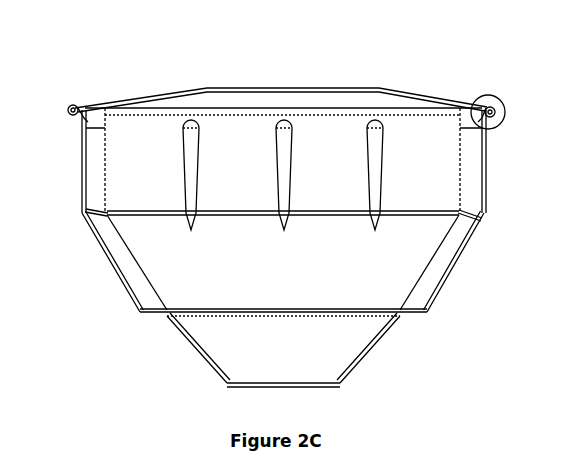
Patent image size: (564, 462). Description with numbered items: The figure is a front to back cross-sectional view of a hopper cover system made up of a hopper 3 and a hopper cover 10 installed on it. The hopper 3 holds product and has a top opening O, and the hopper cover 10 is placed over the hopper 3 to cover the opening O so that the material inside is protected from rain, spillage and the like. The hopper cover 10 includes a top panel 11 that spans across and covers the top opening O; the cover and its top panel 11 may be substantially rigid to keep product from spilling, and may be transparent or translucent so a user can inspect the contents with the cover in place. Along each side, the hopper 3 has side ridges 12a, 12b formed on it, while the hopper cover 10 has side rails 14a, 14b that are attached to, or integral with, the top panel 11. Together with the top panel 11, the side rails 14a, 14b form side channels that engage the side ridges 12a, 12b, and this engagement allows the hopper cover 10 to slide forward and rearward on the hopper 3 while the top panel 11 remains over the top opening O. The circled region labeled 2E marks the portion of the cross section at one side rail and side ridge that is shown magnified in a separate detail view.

The hopper cover 10 is at (379, 88).
The top panel 11 is at (207, 88).
The opening O is at (292, 104).
The magnified view portion 2E is at (474, 97).
The side rail 14a is at (74, 106).
The side rail 14b is at (492, 110).
The side ridge 12a is at (80, 120).
The side ridge 12b is at (485, 124).
The hopper 3 is at (472, 232).